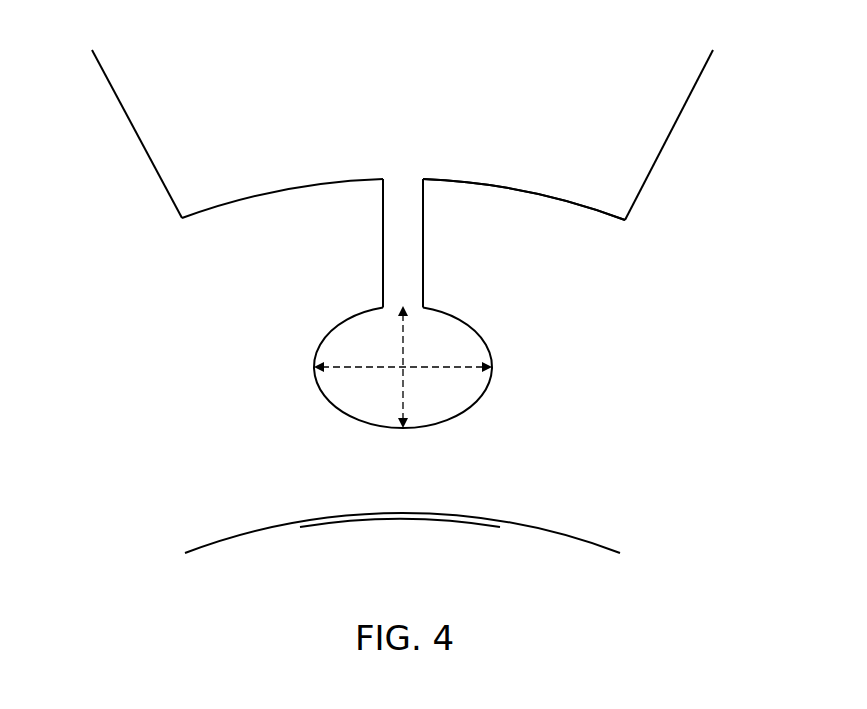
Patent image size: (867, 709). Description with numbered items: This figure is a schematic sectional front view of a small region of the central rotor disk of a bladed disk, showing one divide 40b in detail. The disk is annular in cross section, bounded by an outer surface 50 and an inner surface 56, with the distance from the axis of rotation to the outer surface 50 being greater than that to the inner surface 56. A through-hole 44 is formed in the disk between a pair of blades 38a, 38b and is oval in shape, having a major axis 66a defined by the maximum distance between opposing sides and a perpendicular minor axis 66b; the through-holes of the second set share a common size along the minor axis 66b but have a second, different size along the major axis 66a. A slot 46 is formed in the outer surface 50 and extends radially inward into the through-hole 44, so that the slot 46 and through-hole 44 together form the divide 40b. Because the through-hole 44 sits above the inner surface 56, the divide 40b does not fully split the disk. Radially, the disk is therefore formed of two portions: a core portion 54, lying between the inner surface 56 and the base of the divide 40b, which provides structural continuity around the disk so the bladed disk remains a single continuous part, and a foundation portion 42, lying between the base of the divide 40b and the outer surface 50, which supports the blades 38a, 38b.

The blade 38a is at (112, 86).
The blade 38b is at (689, 95).
The divide 40b is at (402, 168).
The foundation portion 42 is at (277, 235).
The through-hole 44 is at (427, 407).
The slot 46 is at (410, 268).
The outer surface 50 is at (490, 183).
The core portion 54 is at (388, 457).
The inner surface 56 is at (420, 517).
The major axis 66a is at (435, 362).
The minor axis 66b is at (402, 348).